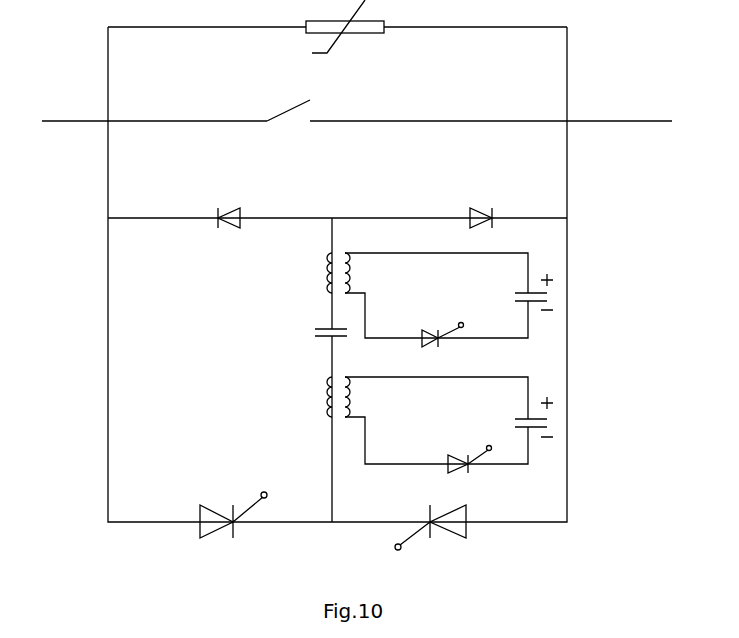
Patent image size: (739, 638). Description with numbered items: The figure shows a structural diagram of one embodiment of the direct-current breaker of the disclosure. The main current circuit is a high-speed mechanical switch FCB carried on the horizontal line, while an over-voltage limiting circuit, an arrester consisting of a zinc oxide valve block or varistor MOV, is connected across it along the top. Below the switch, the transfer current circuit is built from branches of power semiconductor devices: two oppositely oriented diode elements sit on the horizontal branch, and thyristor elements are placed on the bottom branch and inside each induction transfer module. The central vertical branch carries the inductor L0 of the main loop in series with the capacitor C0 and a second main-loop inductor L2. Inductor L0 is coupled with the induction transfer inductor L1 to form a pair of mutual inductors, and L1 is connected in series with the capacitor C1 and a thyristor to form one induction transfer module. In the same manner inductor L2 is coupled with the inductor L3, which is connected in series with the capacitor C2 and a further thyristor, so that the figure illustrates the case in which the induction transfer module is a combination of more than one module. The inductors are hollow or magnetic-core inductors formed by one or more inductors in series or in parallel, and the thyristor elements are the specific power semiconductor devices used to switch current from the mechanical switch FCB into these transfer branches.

The metal oxide varistor MOV is at (350, 35).
The high-speed mechanical switch FCB is at (357, 122).
The power semiconductor device diode is at (356, 202).
The inductor of the main loop L0 is at (315, 273).
The induction transfer inductor L1 is at (436, 295).
The inductor of the main loop L2 is at (312, 397).
The induction transfer inductor L3 is at (436, 420).
The capacitor C0 is at (324, 345).
The capacitor C1 is at (525, 289).
The capacitor C2 is at (525, 415).
The element thyristor is at (350, 440).